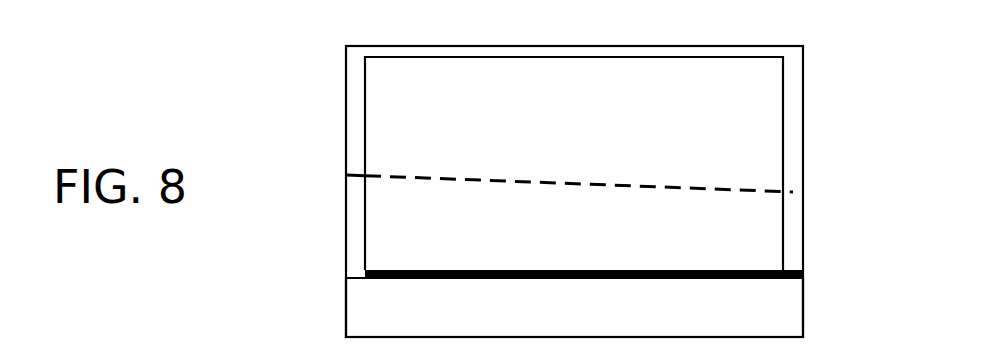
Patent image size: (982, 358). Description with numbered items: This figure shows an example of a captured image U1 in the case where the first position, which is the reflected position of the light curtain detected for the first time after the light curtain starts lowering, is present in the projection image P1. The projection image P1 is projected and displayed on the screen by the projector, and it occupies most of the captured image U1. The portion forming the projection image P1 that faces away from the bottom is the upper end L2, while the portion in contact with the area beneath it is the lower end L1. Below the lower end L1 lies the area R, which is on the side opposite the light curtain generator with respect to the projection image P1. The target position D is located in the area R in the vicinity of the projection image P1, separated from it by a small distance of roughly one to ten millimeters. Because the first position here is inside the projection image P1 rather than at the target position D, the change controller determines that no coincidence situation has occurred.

The captured image U1 is at (803, 68).
The projection image P1 is at (783, 112).
The upper end L2 is at (678, 58).
The lower end L1 is at (665, 270).
The target position D is at (767, 278).
The area R is at (767, 320).